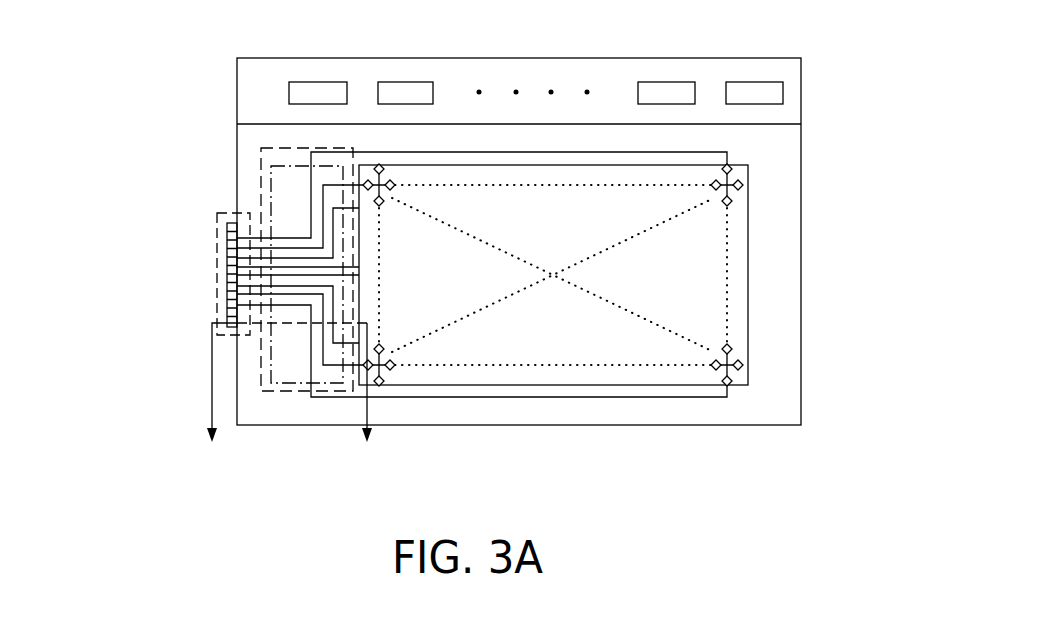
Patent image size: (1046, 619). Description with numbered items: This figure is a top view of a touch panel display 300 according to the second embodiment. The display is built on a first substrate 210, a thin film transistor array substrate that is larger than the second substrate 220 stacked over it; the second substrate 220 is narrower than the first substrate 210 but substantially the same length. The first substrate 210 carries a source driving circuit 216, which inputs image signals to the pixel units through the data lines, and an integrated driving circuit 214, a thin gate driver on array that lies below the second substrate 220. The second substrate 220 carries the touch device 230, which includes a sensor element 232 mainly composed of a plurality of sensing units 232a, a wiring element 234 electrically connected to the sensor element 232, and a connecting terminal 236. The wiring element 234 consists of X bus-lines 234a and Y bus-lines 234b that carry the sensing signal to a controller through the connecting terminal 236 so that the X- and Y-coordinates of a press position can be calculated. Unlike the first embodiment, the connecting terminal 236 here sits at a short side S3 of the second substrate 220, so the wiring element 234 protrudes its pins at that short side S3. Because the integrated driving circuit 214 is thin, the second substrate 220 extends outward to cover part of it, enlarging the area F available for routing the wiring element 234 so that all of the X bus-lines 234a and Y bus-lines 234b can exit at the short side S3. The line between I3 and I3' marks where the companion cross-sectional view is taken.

The first substrate 210 is at (801, 88).
The source driving circuit 216 is at (312, 88).
The second substrate 220 is at (782, 155).
The integrated driving circuit 214 is at (271, 193).
The touch device 230 is at (102, 222).
The connecting terminal 236 is at (217, 255).
The wiring element 234 is at (415, 274).
The X bus-lines 234a is at (311, 357).
The Y bus-lines 234b is at (279, 277).
The sensor element 232 is at (483, 334).
The sensing units 232a is at (743, 364).
The touch panel display 300 is at (820, 485).
The short side S3 is at (235, 141).
The area F is at (288, 393).
The section line end I3 is at (221, 402).
The section line end I3' is at (309, 402).